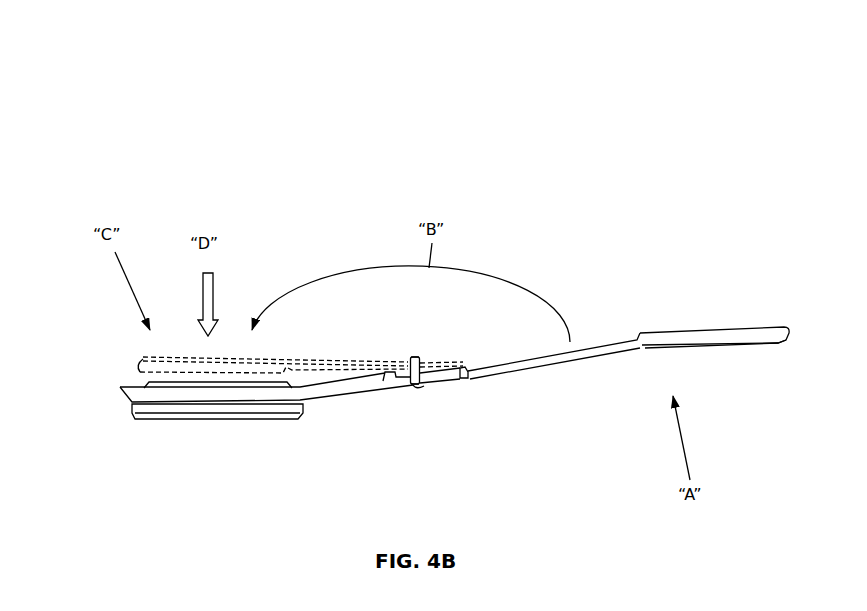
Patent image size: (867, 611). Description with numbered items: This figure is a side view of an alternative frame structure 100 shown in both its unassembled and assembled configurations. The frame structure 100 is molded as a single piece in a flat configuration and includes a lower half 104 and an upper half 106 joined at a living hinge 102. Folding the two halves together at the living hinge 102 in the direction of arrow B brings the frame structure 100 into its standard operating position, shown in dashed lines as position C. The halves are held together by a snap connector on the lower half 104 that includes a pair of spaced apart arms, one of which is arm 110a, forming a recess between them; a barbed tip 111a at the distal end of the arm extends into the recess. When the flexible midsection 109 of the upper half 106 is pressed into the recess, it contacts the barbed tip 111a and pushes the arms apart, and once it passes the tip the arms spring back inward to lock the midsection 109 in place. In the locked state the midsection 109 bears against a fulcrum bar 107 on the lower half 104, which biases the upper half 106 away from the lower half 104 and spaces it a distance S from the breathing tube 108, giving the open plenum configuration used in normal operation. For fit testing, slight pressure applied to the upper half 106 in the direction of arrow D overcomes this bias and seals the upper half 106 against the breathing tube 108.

The frame structure 100 is at (271, 126).
The living hinge 102 is at (465, 381).
The lower half 104 is at (130, 410).
The upper half 106 is at (141, 355).
The fulcrum bar 107 is at (388, 381).
The breathing tube 108 is at (239, 426).
The flexible midsection 109 is at (406, 361).
The spaced apart arm 110a is at (414, 386).
The barbed tip 111a is at (416, 358).